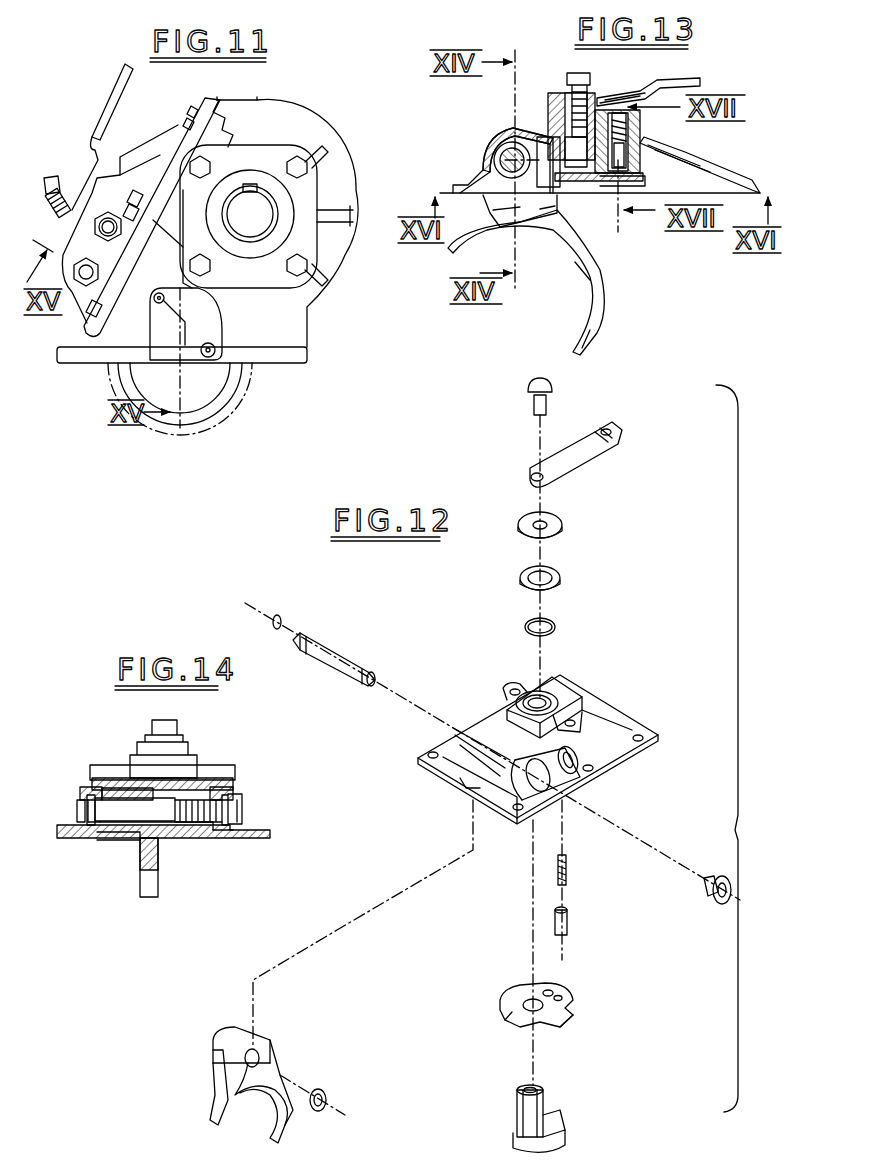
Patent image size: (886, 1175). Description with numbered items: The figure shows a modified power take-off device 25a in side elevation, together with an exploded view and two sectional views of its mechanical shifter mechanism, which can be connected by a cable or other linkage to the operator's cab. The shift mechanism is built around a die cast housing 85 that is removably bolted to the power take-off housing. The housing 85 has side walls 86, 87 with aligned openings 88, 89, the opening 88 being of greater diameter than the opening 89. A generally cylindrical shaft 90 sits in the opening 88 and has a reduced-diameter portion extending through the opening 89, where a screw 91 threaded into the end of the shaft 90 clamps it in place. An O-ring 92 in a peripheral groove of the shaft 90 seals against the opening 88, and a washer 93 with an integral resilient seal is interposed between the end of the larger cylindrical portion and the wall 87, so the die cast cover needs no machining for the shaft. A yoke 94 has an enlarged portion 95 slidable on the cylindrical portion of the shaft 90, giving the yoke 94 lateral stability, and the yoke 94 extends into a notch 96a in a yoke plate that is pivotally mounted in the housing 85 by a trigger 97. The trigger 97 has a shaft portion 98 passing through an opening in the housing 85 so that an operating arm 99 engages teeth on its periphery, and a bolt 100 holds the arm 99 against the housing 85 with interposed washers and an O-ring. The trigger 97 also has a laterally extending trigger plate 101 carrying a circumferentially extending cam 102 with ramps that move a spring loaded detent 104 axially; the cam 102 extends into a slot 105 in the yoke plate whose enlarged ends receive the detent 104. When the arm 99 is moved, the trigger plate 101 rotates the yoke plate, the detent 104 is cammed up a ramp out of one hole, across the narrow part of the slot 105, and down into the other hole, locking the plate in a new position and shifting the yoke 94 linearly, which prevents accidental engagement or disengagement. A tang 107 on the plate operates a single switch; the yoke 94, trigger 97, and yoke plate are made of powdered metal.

In FIG. 11, the power take-off device 25a is at (147, 138).
In FIG. 13, the power take-off device 25a is at (488, 145).
In FIG. 12, the power take-off device 25a is at (600, 695).
In FIG. 13, the die cast housing 85 is at (700, 163).
In FIG. 14, the die cast housing 85 is at (62, 823).
In FIG. 14, the side wall 86 is at (93, 800).
In FIG. 14, the side wall 87 is at (207, 800).
In FIG. 14, the opening 88 is at (97, 838).
In FIG. 14, the opening 89 is at (217, 830).
In FIG. 12, the shaft 90 is at (340, 655).
In FIG. 14, the shaft 90 is at (135, 810).
In FIG. 12, the screw 91 is at (710, 878).
In FIG. 14, the screw 91 is at (245, 812).
In FIG. 12, the O-ring 92 is at (285, 618).
In FIG. 14, the O-ring 92 is at (78, 795).
In FIG. 14, the washer 93 is at (210, 828).
In FIG. 13, the yoke 94 is at (590, 285).
In FIG. 12, the yoke 94 is at (258, 1085).
In FIG. 14, the yoke 94 is at (155, 857).
In FIG. 12, the enlarged portion 95 is at (215, 1053).
In FIG. 14, the enlarged portion 95 is at (127, 834).
In FIG. 12, the notch 96a is at (512, 1020).
In FIG. 13, the trigger 97 is at (583, 182).
In FIG. 12, the trigger 97 is at (539, 1119).
In FIG. 12, the shaft portion 98 is at (517, 1106).
In FIG. 11, the operating arm 99 is at (108, 102).
In FIG. 13, the operating arm 99 is at (695, 80).
In FIG. 12, the operating arm 99 is at (606, 452).
In FIG. 11, the bolt 100 is at (50, 174).
In FIG. 13, the bolt 100 is at (585, 78).
In FIG. 12, the bolt 100 is at (548, 386).
In FIG. 13, the trigger plate 101 is at (645, 181).
In FIG. 12, the trigger plate 101 is at (565, 1142).
In FIG. 12, the cam 102 is at (560, 1112).
In FIG. 13, the spring loaded detent 104 is at (630, 150).
In FIG. 12, the spring loaded detent 104 is at (570, 922).
In FIG. 12, the slot 105 is at (560, 986).
In FIG. 12, the tang 107 is at (565, 1022).